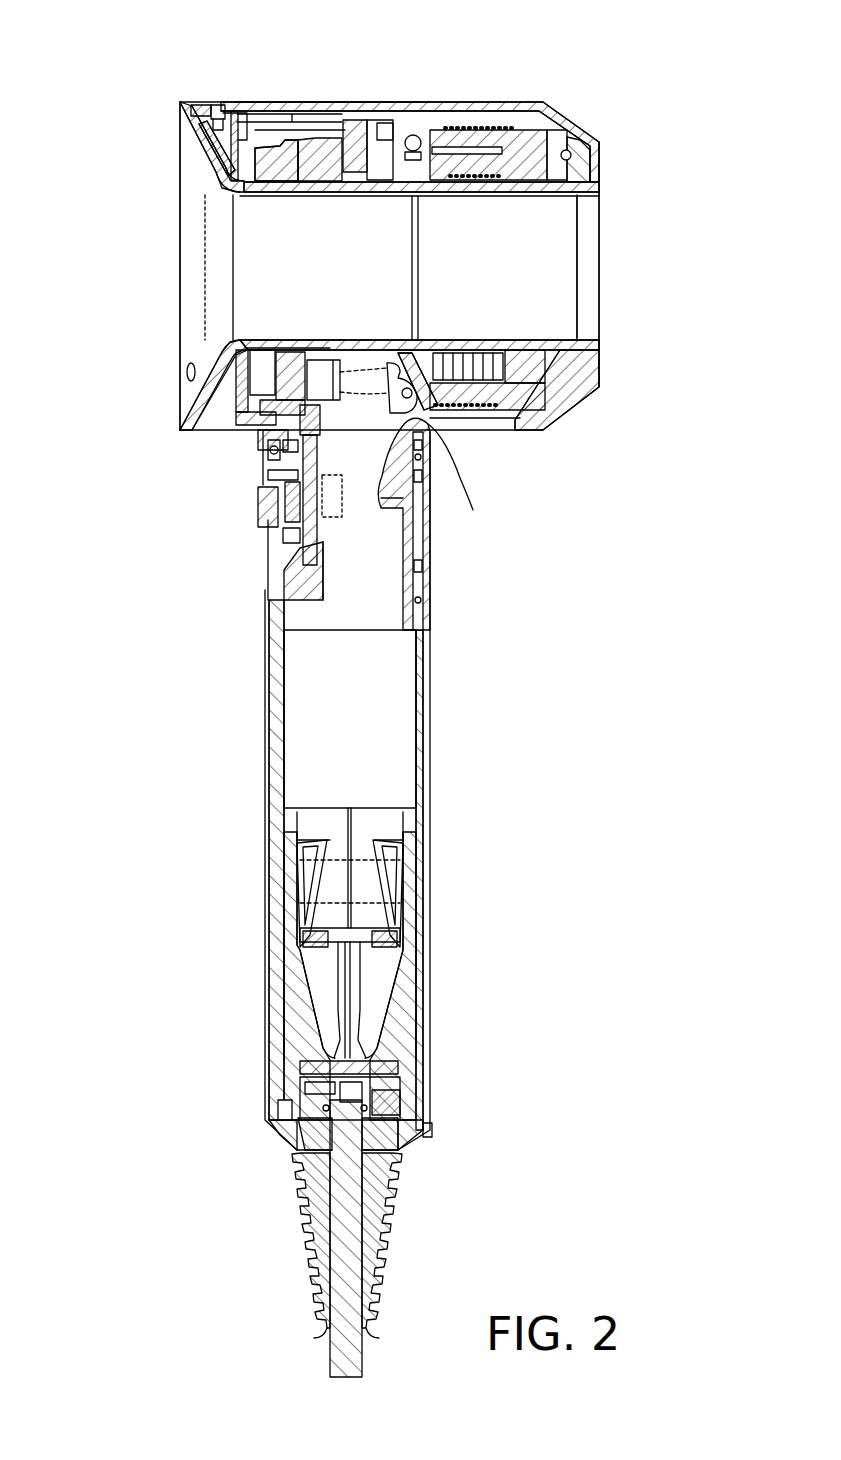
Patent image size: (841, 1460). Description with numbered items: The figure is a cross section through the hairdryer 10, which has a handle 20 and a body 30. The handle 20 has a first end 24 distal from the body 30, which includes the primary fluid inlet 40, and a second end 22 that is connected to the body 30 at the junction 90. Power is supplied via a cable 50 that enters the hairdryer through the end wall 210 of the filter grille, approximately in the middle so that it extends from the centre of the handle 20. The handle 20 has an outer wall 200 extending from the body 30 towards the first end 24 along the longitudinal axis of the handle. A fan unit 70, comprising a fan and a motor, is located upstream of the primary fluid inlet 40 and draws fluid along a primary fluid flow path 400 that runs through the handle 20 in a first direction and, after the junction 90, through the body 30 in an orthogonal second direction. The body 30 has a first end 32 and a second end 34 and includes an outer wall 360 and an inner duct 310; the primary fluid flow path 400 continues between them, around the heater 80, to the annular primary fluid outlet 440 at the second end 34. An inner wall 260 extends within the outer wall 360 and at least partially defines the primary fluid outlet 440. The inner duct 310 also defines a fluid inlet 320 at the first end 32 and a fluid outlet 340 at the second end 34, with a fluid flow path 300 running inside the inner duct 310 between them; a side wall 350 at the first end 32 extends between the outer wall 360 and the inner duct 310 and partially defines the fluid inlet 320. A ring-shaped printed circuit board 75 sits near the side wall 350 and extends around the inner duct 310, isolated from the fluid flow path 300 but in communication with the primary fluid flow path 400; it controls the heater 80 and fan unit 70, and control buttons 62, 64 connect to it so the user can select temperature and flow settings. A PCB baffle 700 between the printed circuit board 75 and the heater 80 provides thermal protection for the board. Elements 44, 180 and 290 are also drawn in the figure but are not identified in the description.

The hairdryer 10 is at (147, 303).
The handle 20 is at (458, 771).
The second end 22 is at (442, 456).
The first end 24 is at (428, 1150).
The body 30 is at (466, 72).
The first end 32 is at (184, 100).
The second end 34 is at (601, 148).
The primary fluid inlet 40 is at (427, 1072).
The collet 44 is at (426, 1005).
The cable 50 is at (392, 1240).
The control button 62 is at (262, 505).
The control button 64 is at (187, 372).
The fan unit 70 is at (365, 722).
The printed circuit board 75 is at (343, 100).
The heater 80 is at (515, 100).
The junction 90 is at (265, 432).
The heat sink 180 is at (503, 416).
The outer wall 200 is at (432, 650).
The end wall 210 is at (268, 1118).
The inner wall 260 is at (575, 100).
The fastener 290 is at (430, 100).
The fluid flow path 300 is at (346, 273).
The inner duct 310 is at (290, 196).
The fluid inlet 320 is at (187, 285).
The fluid outlet 340 is at (600, 252).
The side wall 350 is at (195, 148).
The outer wall 360 is at (300, 100).
The primary fluid flow path 400 is at (387, 557).
The primary fluid outlet 440 is at (597, 357).
The PCB baffle 700 is at (375, 100).